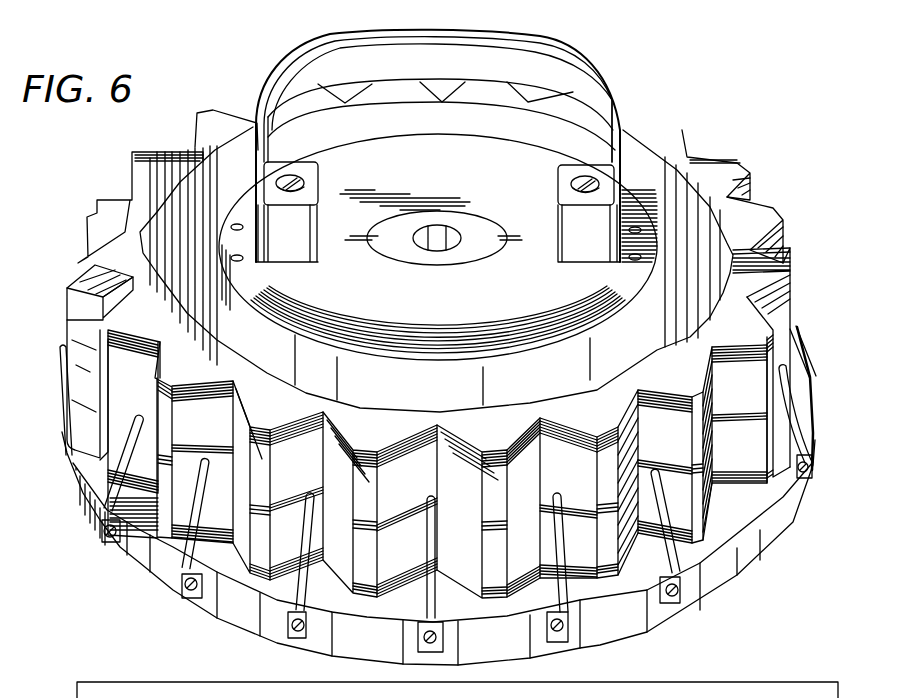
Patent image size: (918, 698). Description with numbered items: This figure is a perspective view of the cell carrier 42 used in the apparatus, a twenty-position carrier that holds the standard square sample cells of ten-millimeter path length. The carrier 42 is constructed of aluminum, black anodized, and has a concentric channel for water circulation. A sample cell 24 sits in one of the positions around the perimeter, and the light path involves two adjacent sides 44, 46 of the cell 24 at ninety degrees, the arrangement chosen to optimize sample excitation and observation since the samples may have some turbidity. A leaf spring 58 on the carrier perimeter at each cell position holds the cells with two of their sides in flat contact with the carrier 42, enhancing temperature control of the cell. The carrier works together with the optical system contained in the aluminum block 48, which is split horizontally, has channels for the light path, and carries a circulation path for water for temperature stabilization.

The carrier 42 is at (801, 178).
The adjacent side of the cell 44 is at (77, 283).
The cell 24 is at (88, 289).
The adjacent side of the cell 46 is at (78, 330).
The aluminum block 48 is at (488, 304).
The leaf spring 58 is at (297, 585).